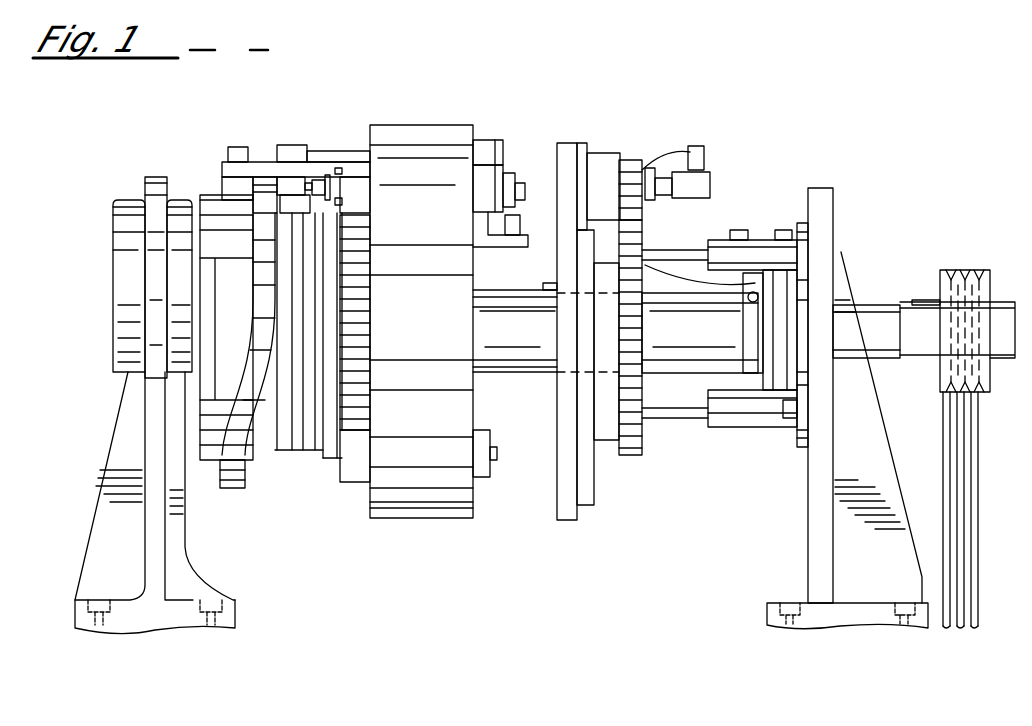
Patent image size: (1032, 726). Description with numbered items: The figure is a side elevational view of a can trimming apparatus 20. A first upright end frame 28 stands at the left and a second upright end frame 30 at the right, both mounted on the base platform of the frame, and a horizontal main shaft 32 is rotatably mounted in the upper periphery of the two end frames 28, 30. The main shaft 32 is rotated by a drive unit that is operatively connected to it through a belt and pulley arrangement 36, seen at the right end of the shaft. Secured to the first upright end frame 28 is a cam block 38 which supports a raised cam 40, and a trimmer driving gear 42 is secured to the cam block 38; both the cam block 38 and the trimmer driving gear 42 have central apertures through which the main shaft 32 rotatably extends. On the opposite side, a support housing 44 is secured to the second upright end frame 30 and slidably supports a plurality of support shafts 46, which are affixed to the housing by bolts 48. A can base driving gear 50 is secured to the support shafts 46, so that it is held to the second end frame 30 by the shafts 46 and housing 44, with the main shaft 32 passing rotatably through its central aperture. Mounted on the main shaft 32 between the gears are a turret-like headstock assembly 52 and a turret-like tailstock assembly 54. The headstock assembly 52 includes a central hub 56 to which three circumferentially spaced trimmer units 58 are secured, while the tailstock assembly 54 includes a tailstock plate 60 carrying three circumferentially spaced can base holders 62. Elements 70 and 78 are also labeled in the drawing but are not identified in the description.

The can trimming apparatus 20 is at (802, 125).
The first upright end frame 28 is at (122, 428).
The second upright end frame 30 is at (845, 535).
The horizontal main shaft 32 is at (916, 302).
The belt and pulley arrangement 36 is at (980, 490).
The cam block 38 is at (271, 445).
The raised cam 40 is at (237, 488).
The trimmer driving gear 42 is at (352, 417).
The support housing 44 is at (762, 247).
The support shafts 46 is at (697, 248).
The bolts 48 is at (752, 242).
The can base driving gear 50 is at (635, 458).
The headstock assembly 52 is at (425, 110).
The tailstock assembly 54 is at (628, 157).
The central hub 56 is at (437, 502).
The trimmer units 58 is at (497, 168).
The tailstock plate 60 is at (567, 512).
The can base holders 62 is at (583, 145).
The mounting block 70 is at (265, 160).
The adjustment knob 78 is at (515, 175).